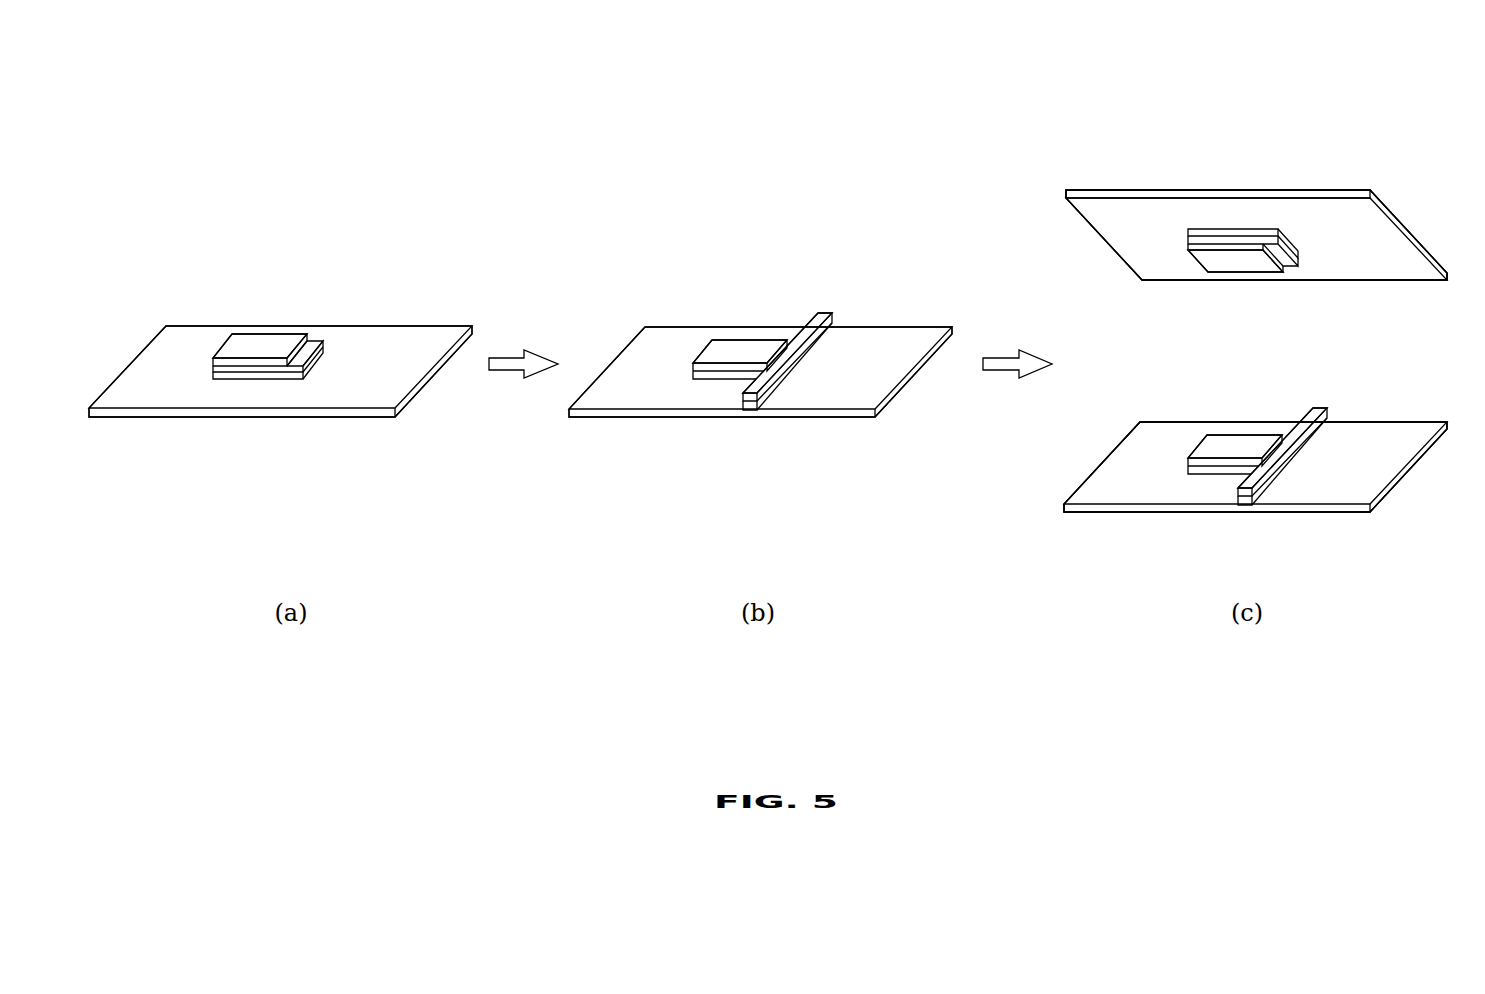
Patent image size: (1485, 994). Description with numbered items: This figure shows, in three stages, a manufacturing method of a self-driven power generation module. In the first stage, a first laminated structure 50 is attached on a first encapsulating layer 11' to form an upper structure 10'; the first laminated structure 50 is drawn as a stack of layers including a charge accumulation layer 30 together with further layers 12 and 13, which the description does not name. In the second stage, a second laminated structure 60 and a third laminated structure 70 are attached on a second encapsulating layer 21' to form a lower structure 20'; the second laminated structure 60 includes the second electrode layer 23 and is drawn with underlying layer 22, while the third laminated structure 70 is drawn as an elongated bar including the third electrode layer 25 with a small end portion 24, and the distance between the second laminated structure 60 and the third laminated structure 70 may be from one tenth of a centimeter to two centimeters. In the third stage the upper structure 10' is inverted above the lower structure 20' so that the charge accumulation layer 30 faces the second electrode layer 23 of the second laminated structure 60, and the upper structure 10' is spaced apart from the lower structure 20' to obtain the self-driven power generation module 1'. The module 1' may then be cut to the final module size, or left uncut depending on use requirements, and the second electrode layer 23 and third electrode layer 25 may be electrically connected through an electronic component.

The self-driven power generation module 1' is at (1263, 290).
The upper structure 10' is at (768, 266).
The first encapsulating layer 11' is at (768, 269).
The first base layer 12 is at (257, 374).
The intermediate layer 13 is at (312, 344).
The charge accumulation layer 30 is at (285, 345).
The first laminated structure 50 is at (250, 321).
The lower structure 20' is at (1008, 355).
The second encapsulating layer 21' is at (1008, 390).
The second base layer 22 is at (710, 378).
The second electrode layer 23 is at (760, 352).
The spacer pad 24 is at (748, 409).
The third electrode layer 25 is at (816, 313).
The second laminated structure 60 is at (845, 301).
The third laminated structure 70 is at (729, 326).